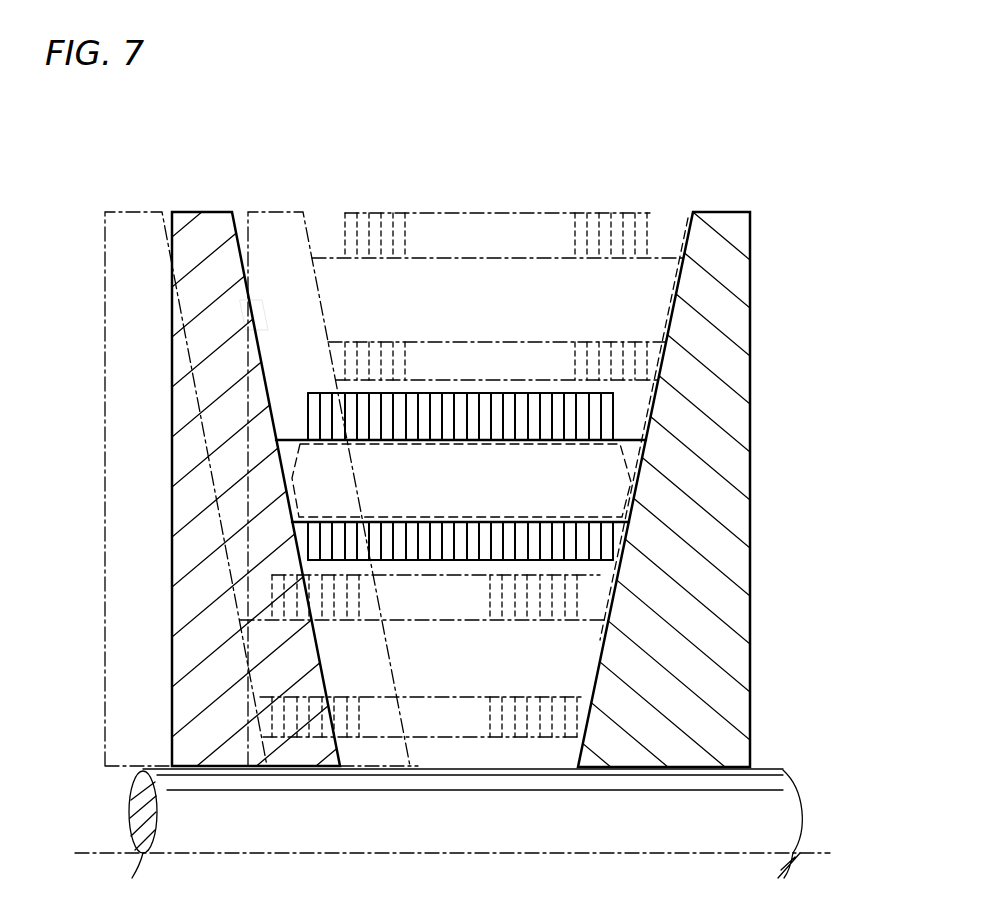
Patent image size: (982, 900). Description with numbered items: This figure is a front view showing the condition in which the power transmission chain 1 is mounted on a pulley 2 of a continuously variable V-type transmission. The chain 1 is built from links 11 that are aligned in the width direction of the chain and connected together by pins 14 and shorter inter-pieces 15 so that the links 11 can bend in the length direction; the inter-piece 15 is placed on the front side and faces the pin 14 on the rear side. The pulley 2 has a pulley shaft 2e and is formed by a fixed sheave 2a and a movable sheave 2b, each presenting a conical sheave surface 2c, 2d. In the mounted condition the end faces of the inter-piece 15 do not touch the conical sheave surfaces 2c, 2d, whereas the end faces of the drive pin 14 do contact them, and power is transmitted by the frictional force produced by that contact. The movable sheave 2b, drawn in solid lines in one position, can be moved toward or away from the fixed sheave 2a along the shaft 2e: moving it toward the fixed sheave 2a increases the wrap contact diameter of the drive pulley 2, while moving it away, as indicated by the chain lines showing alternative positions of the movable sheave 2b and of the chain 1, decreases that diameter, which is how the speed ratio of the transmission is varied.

The power transmission chain 1 is at (461, 494).
The pulley 2 is at (752, 377).
The fixed sheave 2a is at (728, 612).
The movable sheave 2b is at (133, 210).
The conical sheave surface 2c is at (700, 284).
The conical sheave surface 2d is at (247, 312).
The pulley shaft 2e is at (775, 813).
The link 11 is at (443, 422).
The pin 14 is at (632, 453).
The inter-piece 15 is at (640, 498).